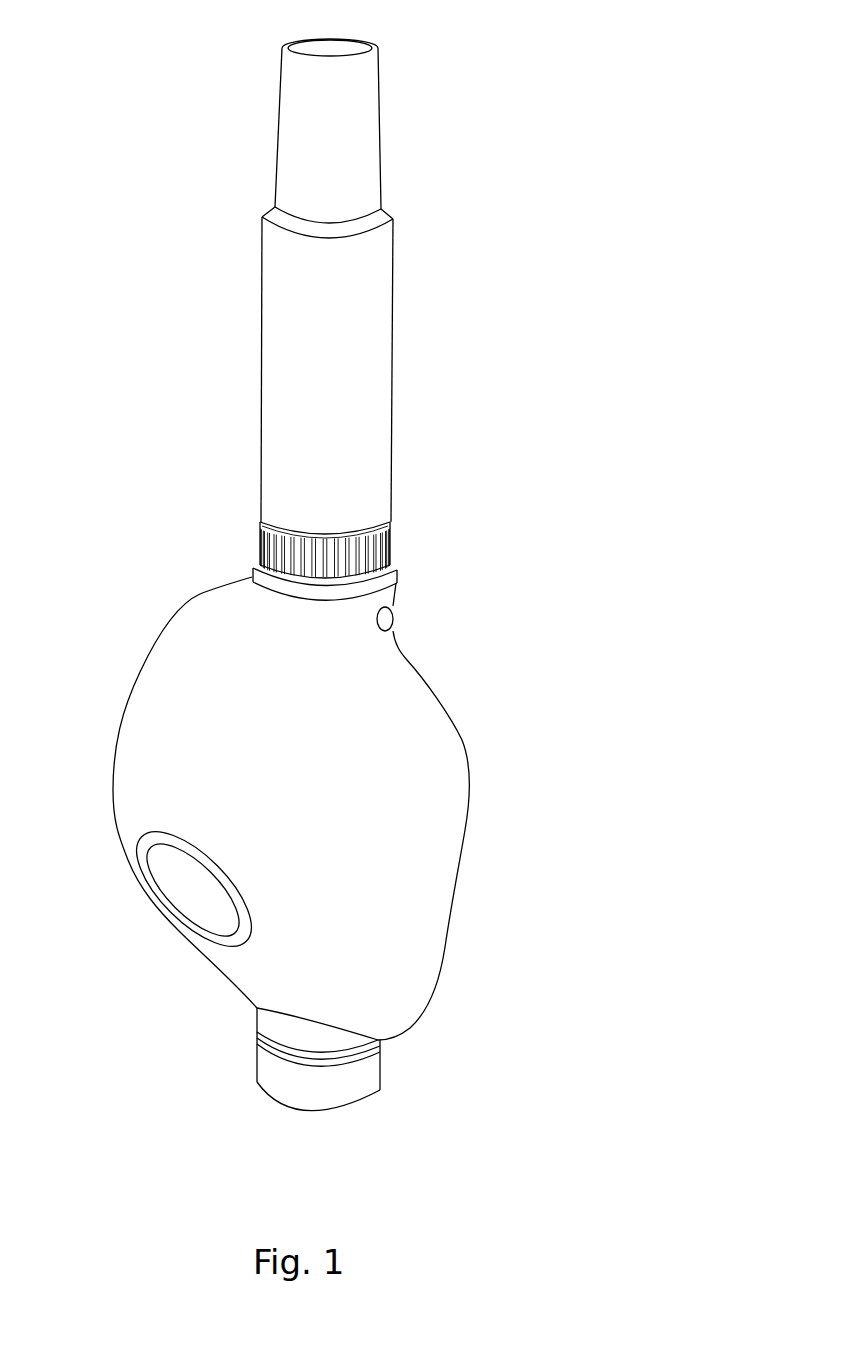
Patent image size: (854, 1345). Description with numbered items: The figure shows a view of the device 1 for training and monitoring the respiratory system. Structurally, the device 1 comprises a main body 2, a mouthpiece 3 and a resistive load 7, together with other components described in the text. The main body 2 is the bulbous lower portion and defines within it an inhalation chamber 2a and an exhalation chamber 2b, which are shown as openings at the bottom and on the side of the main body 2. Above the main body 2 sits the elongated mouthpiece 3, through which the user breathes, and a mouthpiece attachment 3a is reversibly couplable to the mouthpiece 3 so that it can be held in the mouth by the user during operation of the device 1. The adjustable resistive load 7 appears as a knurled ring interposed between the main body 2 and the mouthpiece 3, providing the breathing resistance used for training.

The device for training and monitoring the respiratory system 1 is at (165, 438).
The main body 2 is at (413, 743).
The inhalation chamber 2a is at (295, 1092).
The exhalation chamber 2b is at (188, 895).
The mouthpiece 3 is at (350, 465).
The mouthpiece attachment 3a is at (348, 142).
The resistive load 7 is at (375, 551).